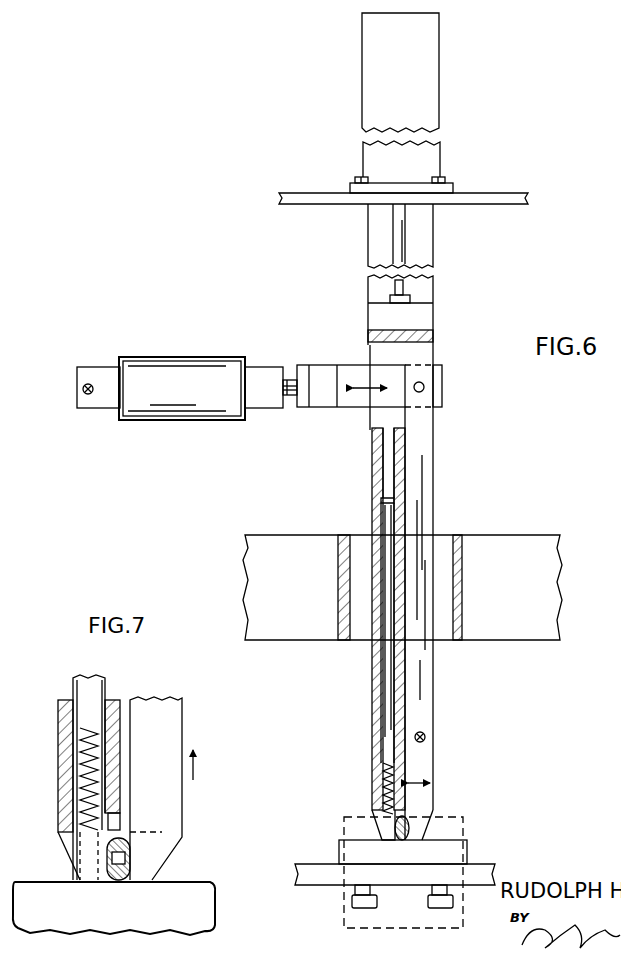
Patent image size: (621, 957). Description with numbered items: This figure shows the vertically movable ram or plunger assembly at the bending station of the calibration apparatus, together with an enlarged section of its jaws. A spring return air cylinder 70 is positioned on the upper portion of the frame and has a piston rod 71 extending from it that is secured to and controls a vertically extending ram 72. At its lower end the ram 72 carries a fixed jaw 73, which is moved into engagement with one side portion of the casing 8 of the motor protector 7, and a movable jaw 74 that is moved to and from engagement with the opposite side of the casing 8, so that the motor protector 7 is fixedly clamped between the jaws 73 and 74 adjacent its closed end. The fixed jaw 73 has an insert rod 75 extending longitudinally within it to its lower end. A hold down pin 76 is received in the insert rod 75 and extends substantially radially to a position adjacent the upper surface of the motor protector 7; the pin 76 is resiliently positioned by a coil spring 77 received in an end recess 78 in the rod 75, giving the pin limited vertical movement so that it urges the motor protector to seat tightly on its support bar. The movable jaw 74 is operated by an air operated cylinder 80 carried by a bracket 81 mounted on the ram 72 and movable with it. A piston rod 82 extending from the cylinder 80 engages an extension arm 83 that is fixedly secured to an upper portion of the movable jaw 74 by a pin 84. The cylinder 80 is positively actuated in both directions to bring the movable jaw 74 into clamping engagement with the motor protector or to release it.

In FIG. 6, the spring return air cylinder 70 is at (432, 78).
In FIG. 6, the piston rod 71 is at (402, 240).
In FIG. 6, the ram 72 is at (425, 303).
In FIG. 6, the fixed jaw 73 is at (376, 449).
In FIG. 7, the fixed jaw 73 is at (66, 818).
In FIG. 6, the movable jaw 74 is at (427, 698).
In FIG. 7, the movable jaw 74 is at (174, 832).
In FIG. 6, the insert rod 75 is at (386, 700).
In FIG. 7, the insert rod 75 is at (97, 690).
In FIG. 6, the hold down pin 76 is at (405, 818).
In FIG. 7, the hold down pin 76 is at (116, 840).
In FIG. 6, the coil spring 77 is at (382, 778).
In FIG. 7, the coil spring 77 is at (84, 756).
In FIG. 7, the end recess 78 is at (120, 822).
In FIG. 6, the air operated cylinder 80 is at (175, 362).
In FIG. 6, the bracket 81 is at (107, 373).
In FIG. 6, the piston rod 82 is at (293, 378).
In FIG. 6, the extension arm 83 is at (347, 374).
In FIG. 6, the pin 84 is at (424, 386).
In FIG. 6, the casing 8 is at (412, 828).
In FIG. 7, the casing 8 is at (133, 858).
In FIG. 6, the motor protector 7 is at (401, 845).
In FIG. 7, the motor protector 7 is at (110, 884).